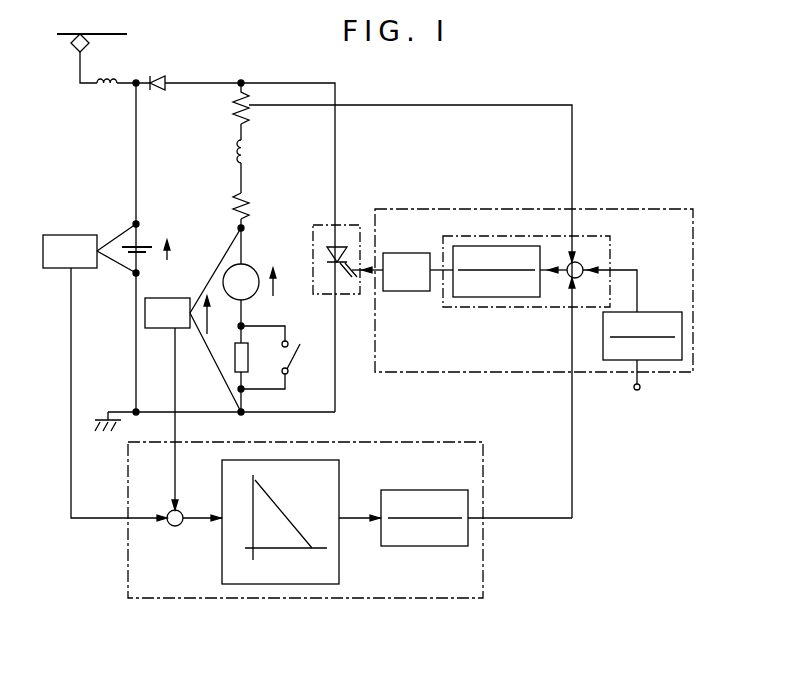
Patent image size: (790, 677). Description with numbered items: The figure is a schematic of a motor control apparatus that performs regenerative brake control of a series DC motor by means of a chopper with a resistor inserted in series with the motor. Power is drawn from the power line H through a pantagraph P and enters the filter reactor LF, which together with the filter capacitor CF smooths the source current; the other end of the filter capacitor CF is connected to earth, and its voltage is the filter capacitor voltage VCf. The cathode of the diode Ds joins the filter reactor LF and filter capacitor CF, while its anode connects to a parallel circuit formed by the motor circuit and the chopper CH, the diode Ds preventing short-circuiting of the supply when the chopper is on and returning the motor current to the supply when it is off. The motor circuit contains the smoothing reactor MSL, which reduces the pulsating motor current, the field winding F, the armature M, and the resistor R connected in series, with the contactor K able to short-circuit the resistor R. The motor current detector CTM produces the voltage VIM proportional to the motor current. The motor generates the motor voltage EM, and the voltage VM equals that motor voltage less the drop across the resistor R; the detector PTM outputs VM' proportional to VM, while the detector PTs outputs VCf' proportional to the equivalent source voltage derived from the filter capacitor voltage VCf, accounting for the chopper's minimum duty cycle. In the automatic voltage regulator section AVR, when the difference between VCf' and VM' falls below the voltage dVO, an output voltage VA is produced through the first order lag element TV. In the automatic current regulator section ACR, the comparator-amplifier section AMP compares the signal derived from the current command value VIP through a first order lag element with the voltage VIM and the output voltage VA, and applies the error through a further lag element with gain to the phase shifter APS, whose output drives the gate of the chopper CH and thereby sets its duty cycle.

The power line H is at (110, 33).
The pantagraph P is at (72, 50).
The filter reactor LF is at (107, 91).
The diode Ds is at (156, 76).
The motor current detector CTM is at (233, 104).
The smoothing reactor MSL is at (247, 147).
The field winding F is at (249, 211).
The armature M is at (241, 282).
The resistor R is at (235, 362).
The contactor K is at (296, 358).
The motor voltage EM is at (275, 283).
The voltage VM is at (219, 316).
The voltage VM detector PTM is at (193, 369).
The voltage Vcf detector PTs is at (105, 372).
The filter capacitor CF is at (147, 242).
The filter capacitor voltage VCf is at (182, 251).
The chopper CH is at (358, 225).
The automatic current regulator section ACR is at (534, 300).
The phase shifter APS is at (418, 272).
The comparator-amplifier section AMP is at (495, 307).
The voltage VIM is at (558, 243).
The current command value VIP is at (632, 338).
The output voltage VA is at (572, 352).
The automatic voltage regulator section AVR is at (305, 538).
The voltage VM' is at (153, 465).
The voltage VCf' is at (157, 539).
The voltage ΔVo dVO is at (280, 522).
The first order lag element TV is at (403, 518).